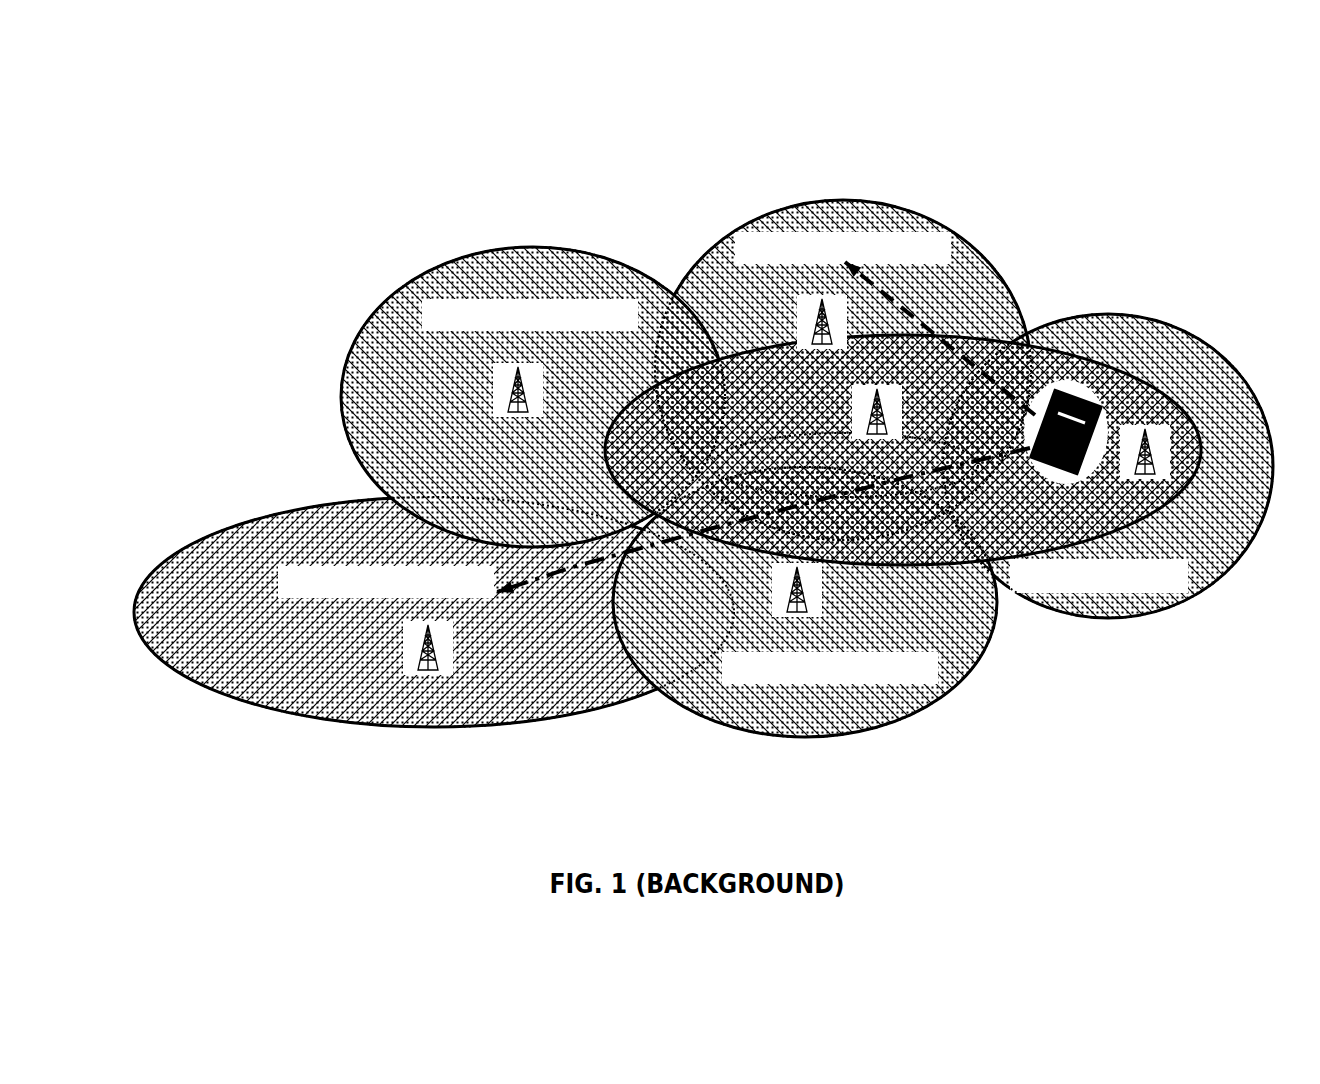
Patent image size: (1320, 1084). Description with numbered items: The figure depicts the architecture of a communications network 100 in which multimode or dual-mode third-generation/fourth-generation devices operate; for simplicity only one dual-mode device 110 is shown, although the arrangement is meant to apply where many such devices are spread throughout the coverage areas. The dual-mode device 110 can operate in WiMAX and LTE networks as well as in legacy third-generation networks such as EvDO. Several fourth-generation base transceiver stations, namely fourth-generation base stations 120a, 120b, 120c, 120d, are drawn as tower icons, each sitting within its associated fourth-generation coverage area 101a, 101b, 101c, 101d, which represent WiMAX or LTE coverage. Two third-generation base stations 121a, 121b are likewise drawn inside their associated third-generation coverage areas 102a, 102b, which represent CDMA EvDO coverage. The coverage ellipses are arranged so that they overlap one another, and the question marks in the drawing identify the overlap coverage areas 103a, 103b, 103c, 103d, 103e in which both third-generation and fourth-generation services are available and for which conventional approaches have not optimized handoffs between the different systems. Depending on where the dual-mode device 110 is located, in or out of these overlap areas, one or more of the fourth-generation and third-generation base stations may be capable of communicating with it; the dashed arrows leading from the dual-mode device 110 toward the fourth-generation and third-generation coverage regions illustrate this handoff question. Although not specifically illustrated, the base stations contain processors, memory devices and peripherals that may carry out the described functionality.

The communications network 100 is at (278, 130).
The 4G coverage area 101a is at (533, 382).
The 4G coverage area 101b is at (843, 352).
The 4G coverage area 101c is at (565, 606).
The 4G coverage area 101d is at (1108, 476).
The 3G coverage area 102a is at (434, 631).
The 3G coverage area 102b is at (1048, 348).
The dual-mode device 110 is at (1092, 393).
The 4G base station 120a is at (489, 390).
The 4G base station 120b is at (789, 322).
The 4G base station 120c is at (1177, 459).
The 4G base station 120d is at (827, 594).
The 3G base station 121a is at (451, 648).
The 3G base station 121b is at (886, 399).
The overlap coverage area 103a is at (521, 526).
The overlap coverage area 103b is at (845, 494).
The overlap coverage area 103c is at (890, 341).
The overlap coverage area 103d is at (771, 520).
The overlap coverage area 103e is at (677, 606).